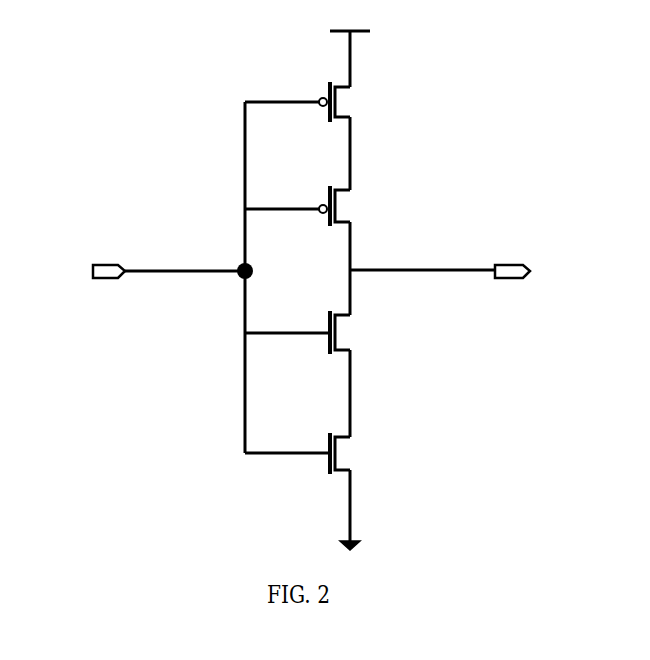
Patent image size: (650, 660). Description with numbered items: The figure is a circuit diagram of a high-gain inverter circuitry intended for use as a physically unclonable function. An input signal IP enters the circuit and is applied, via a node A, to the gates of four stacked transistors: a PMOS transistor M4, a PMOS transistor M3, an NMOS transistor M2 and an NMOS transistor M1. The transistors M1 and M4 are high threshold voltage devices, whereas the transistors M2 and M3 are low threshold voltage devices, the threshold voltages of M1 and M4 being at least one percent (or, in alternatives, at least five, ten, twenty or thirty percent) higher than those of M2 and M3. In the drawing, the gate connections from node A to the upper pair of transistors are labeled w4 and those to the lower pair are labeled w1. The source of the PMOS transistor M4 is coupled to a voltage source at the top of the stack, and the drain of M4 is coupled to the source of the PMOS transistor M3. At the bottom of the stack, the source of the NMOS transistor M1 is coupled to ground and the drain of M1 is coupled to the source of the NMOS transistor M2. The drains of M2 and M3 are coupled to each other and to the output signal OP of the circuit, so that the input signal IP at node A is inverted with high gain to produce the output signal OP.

The PMOS transistor M4 is at (403, 102).
The PMOS transistor M3 is at (402, 206).
The NMOS transistor M2 is at (402, 332).
The NMOS transistor M1 is at (407, 453).
The gate width / wire node w4 connecting M4 and M3 gates w4 is at (289, 186).
The gate width / wire node w1 connecting M2 and M1 gates w1 is at (291, 362).
The node A is at (233, 287).
The input signal IP is at (146, 271).
The output signal OP is at (460, 286).